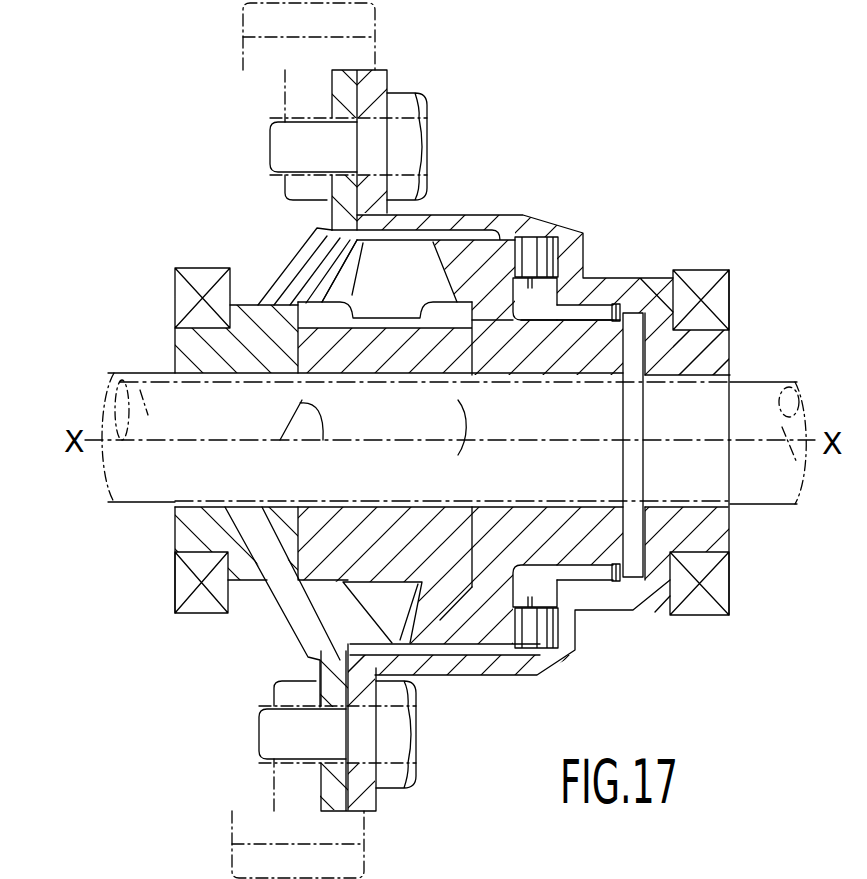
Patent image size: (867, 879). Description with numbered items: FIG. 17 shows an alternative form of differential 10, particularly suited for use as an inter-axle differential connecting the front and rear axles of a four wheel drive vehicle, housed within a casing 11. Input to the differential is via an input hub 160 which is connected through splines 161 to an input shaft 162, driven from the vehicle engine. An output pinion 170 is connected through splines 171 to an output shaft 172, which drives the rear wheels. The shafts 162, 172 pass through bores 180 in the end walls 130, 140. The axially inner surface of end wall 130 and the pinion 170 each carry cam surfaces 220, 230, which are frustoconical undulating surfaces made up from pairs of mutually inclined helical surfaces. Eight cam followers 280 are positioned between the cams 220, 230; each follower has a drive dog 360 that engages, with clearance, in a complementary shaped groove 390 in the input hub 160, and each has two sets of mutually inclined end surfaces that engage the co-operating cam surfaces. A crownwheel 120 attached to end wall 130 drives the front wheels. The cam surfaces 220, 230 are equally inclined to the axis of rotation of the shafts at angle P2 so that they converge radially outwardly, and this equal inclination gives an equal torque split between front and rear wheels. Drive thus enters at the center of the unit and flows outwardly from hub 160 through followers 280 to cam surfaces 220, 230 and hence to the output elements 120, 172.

The coupling device 10 is at (580, 208).
The housing 11 is at (473, 222).
The crownwheel 120 is at (364, 848).
The end wall 130 is at (265, 572).
The end wall 140 is at (647, 583).
The input hub 160 is at (338, 528).
The splines 161 is at (380, 376).
The input shaft 162 is at (133, 386).
The output pinion 170 is at (533, 358).
The splines 171 is at (543, 507).
The output shaft 172 is at (757, 400).
The bores 180 is at (232, 505).
The cam surface 220 is at (340, 258).
The cam surface 230 is at (427, 245).
The cam followers 280 is at (420, 293).
The drive dog 360 is at (360, 313).
The groove 390 is at (457, 313).
The angle P2 is at (300, 403).